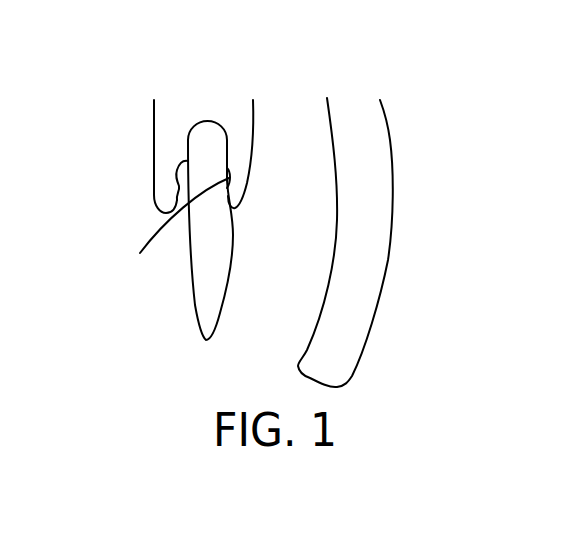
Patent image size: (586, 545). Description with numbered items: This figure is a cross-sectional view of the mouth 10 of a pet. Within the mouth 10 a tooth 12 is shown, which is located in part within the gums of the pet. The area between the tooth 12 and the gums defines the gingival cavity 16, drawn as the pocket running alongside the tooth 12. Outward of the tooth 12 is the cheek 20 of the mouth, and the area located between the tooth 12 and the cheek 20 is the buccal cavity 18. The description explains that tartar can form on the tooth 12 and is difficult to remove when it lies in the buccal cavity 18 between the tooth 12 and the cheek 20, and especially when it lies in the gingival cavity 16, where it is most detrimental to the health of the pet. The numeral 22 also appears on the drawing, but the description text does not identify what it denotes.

The mouth 10 is at (397, 347).
The tooth 12 is at (393, 178).
The gingival cavity 16 is at (153, 128).
The buccal cavity 18 is at (193, 305).
The cheek 20 is at (173, 180).
The strap 22 is at (166, 221).